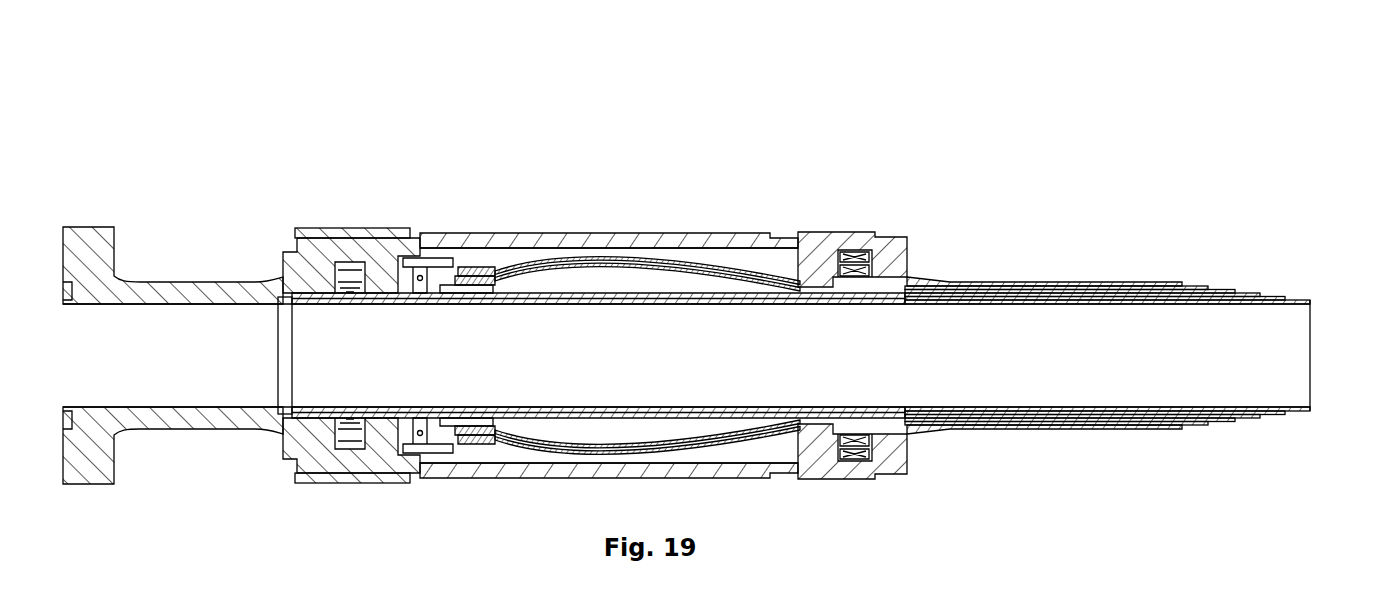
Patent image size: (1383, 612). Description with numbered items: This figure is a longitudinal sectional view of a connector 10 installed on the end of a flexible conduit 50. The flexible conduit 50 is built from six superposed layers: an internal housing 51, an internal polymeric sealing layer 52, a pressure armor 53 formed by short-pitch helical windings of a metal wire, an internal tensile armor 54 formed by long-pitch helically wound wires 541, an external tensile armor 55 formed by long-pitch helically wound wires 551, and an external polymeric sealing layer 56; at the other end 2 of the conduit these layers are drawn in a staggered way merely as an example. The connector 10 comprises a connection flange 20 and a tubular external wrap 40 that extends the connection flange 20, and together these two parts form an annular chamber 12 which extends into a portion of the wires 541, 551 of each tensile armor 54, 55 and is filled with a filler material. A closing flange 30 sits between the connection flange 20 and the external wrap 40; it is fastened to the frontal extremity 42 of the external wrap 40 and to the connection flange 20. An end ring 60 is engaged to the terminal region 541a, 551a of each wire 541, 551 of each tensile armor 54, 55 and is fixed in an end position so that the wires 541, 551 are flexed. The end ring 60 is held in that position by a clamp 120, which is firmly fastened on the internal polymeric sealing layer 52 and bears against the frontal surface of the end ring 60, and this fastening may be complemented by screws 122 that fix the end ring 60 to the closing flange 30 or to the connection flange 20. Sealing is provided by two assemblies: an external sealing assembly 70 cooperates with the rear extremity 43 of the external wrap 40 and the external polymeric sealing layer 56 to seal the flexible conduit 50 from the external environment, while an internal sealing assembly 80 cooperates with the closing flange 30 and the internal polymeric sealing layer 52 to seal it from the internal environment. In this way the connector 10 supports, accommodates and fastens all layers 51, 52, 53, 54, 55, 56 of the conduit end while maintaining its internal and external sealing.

The other end 2 is at (1302, 186).
The connector 10 is at (255, 185).
The annular chamber 12 is at (663, 283).
The connection flange 20 is at (195, 280).
The closing flange 30 is at (367, 240).
The external wrap 40 is at (630, 232).
The frontal extremity 42 is at (397, 229).
The rear extremity 43 is at (838, 232).
The flexible conduit 50 is at (1137, 354).
The internal housing 51 is at (1307, 301).
The internal polymeric sealing layer 52 is at (1282, 297).
The pressure armor 53 is at (1255, 294).
The internal tensile armor 54 is at (1230, 290).
The external tensile armor 55 is at (1200, 287).
The external polymeric sealing layer 56 is at (1175, 283).
The end ring 60 is at (522, 294).
The external sealing assembly 70 is at (893, 234).
The internal sealing assembly 80 is at (355, 276).
The clamp 120 is at (421, 440).
The screws 122 is at (418, 262).
The wires 541 is at (568, 260).
The terminal region 541a is at (465, 270).
The wires 551 is at (596, 257).
The terminal region 551a is at (487, 278).